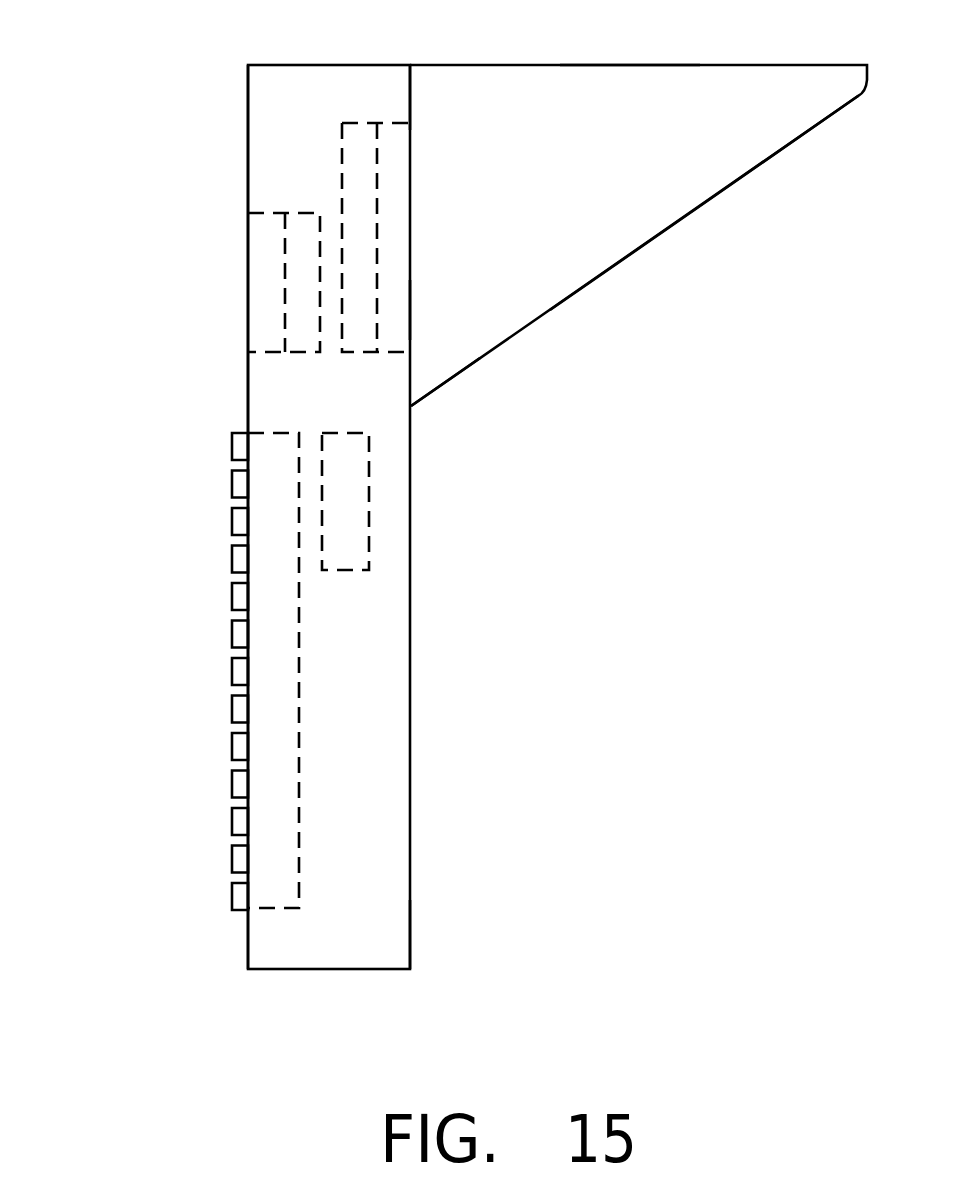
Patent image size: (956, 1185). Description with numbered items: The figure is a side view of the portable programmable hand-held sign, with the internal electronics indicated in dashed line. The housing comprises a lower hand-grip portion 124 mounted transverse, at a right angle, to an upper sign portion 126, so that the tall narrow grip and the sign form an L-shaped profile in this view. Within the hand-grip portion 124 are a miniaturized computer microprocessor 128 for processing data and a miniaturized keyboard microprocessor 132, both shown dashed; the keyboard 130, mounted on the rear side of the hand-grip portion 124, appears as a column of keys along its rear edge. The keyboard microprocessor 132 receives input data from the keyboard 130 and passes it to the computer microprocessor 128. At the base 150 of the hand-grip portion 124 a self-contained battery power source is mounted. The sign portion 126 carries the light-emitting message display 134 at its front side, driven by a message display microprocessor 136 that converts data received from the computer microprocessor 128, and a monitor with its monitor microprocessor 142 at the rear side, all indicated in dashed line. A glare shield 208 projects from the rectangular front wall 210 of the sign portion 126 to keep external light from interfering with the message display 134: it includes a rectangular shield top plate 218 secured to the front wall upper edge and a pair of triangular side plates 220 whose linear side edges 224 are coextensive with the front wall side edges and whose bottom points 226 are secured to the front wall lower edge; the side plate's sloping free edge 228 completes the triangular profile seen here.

The hand-grip portion 124 is at (414, 765).
The sign portion 126 is at (247, 117).
The computer microprocessor 128 is at (347, 532).
The keyboard 130 is at (164, 671).
The keyboard microprocessor 132 is at (272, 670).
The message display 134 is at (395, 181).
The message display microprocessor 136 is at (362, 272).
The monitor microprocessor 142 is at (283, 218).
The base 150 is at (393, 933).
The glare shield 208 is at (639, 92).
The front wall 210 is at (410, 107).
The shield top plate 218 is at (605, 62).
The side plates 220 is at (582, 260).
The side plate linear side edges 224 is at (413, 302).
The side plate bottom points 226 is at (413, 410).
The inclined edge 228 is at (728, 187).